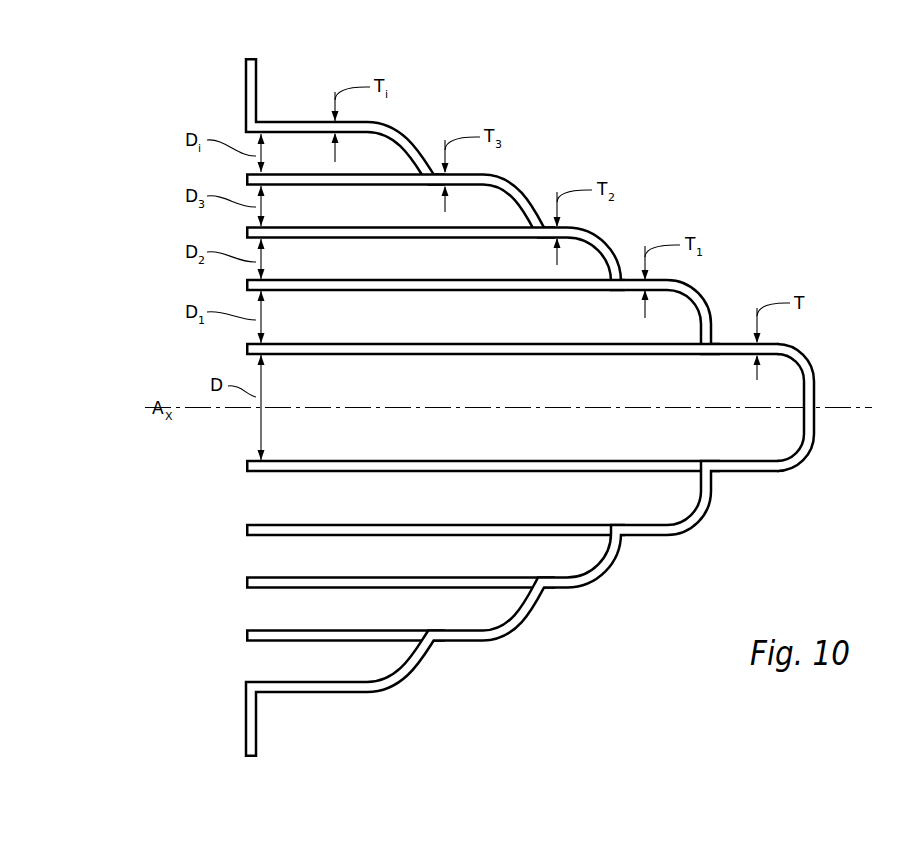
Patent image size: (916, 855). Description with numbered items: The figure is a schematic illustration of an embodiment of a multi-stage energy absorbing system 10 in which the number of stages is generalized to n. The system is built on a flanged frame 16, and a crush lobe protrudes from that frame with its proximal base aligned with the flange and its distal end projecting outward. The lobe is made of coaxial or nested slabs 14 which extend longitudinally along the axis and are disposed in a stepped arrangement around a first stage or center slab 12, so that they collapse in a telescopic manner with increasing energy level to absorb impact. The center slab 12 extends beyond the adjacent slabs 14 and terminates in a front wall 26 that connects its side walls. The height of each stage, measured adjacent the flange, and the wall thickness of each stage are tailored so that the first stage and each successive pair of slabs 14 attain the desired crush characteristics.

The multi-stage energy absorbing system 10 is at (180, 101).
The first stage or center slab 12 is at (762, 476).
The nested slabs 14 is at (704, 522).
The flanged frame 16 is at (258, 93).
The front wall 26 is at (817, 385).